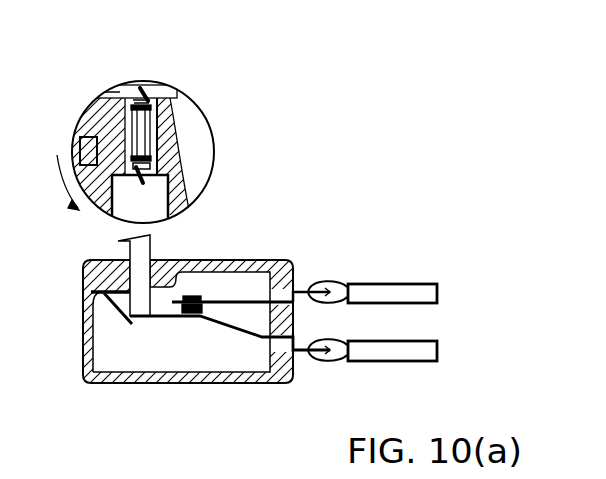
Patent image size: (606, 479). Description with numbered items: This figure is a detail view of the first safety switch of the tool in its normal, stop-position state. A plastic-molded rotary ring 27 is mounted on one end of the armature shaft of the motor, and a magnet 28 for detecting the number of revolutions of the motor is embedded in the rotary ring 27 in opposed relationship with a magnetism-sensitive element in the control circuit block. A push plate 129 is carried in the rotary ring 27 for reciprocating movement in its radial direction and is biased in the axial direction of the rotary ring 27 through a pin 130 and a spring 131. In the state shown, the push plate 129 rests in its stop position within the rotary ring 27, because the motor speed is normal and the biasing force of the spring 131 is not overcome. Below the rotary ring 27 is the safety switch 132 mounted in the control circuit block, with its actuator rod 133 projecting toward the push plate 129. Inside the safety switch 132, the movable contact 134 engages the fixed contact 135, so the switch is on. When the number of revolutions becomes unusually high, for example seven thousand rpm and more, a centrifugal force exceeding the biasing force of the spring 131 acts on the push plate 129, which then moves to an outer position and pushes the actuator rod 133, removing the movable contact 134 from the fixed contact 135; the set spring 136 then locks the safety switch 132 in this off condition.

The rotary ring 27 is at (183, 108).
The magnet 28 is at (75, 130).
The push plate 129 is at (160, 207).
The pin 130 is at (131, 85).
The spring 131 is at (140, 152).
The safety switch 132 is at (284, 262).
The actuator rod 133 is at (150, 244).
The movable contact 134 is at (182, 320).
The fixed contact 135 is at (200, 300).
The set spring 136 is at (92, 322).